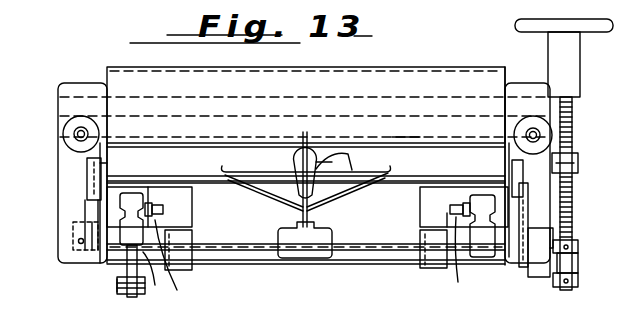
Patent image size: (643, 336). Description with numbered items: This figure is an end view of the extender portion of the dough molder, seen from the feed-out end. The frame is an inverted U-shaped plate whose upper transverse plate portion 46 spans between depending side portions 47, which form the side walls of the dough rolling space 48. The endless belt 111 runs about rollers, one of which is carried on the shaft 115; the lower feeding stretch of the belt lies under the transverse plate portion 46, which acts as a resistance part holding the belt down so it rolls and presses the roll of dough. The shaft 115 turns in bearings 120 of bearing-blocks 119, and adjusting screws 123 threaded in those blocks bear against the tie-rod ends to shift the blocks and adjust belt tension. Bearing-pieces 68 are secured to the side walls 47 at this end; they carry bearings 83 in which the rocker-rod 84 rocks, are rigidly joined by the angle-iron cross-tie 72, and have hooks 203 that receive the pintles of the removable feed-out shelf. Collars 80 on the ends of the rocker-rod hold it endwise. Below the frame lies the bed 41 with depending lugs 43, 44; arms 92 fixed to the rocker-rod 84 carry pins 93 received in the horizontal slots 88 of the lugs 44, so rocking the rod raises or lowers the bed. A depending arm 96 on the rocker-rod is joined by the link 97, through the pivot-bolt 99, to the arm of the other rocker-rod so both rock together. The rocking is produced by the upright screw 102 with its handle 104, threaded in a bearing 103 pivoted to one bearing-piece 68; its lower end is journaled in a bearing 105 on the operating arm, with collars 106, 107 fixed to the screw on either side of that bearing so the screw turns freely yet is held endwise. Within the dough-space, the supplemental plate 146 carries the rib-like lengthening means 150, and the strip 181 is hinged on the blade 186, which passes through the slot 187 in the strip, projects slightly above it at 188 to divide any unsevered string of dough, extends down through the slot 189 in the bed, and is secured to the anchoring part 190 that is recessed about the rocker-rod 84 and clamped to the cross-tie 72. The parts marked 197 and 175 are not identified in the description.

The endless belt 111 is at (416, 67).
The upper transverse plate portion 46 is at (397, 137).
The bed 41 is at (435, 175).
The depending side portions 47 is at (108, 163).
The dough rolling space 48 is at (166, 167).
The shaft 115 is at (62, 102).
The bearings 120 is at (64, 118).
The bearing-blocks 119 is at (72, 136).
The adjusting screws 123 is at (77, 140).
The hooks 203 is at (88, 180).
The bearing-pieces 68 is at (63, 201).
The collars 80 is at (76, 252).
The bearings 83 is at (95, 252).
The handle 104 is at (597, 31).
The screw 102 is at (574, 197).
The threaded bearing 103 is at (579, 165).
The collar 106 is at (579, 246).
The bearing 105 is at (579, 264).
The collar 107 is at (579, 283).
The upwardly projecting blade portion 188 is at (309, 136).
The supplemental plate 146 is at (290, 168).
The slot 187 is at (338, 163).
The strip 181 is at (306, 160).
The lengthening means 150 is at (245, 168).
The left arm 197 is at (264, 194).
The right arm 175 is at (347, 192).
The slot 189 is at (301, 210).
The blade 186 is at (309, 206).
The anchoring part 190 is at (310, 256).
The cross-tie 72 is at (352, 258).
The rocker-rod 84 is at (248, 259).
The depending lugs 44 is at (192, 218).
The arms 92 is at (140, 196).
The pins 93 is at (165, 208).
The depending lugs 43 is at (181, 270).
The link 97 is at (131, 294).
The pivot-bolt 99 is at (118, 291).
The depending arm 96 is at (157, 276).
The horizontal slots 88 is at (311, 263).